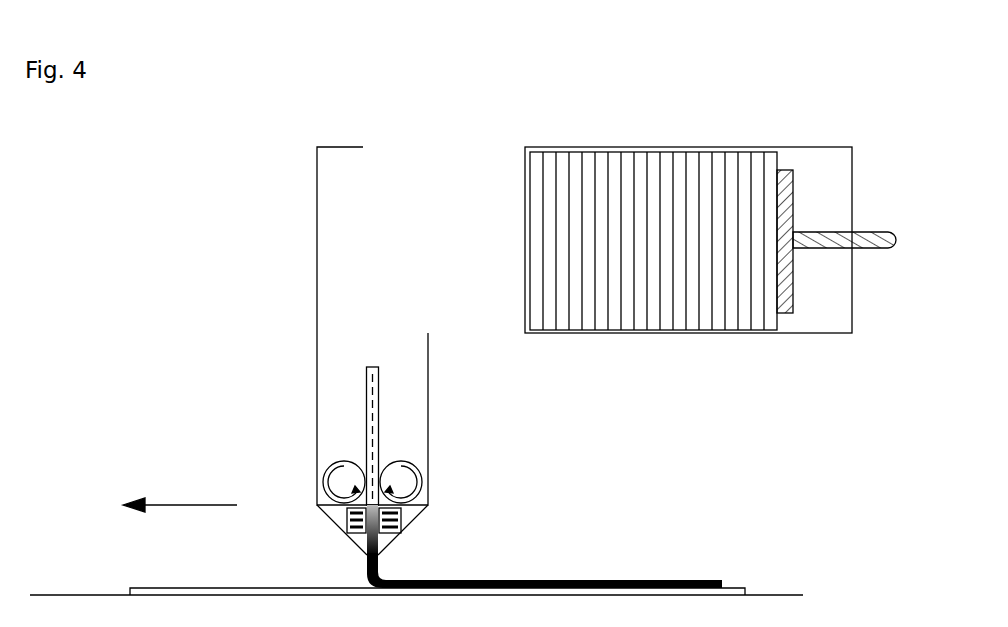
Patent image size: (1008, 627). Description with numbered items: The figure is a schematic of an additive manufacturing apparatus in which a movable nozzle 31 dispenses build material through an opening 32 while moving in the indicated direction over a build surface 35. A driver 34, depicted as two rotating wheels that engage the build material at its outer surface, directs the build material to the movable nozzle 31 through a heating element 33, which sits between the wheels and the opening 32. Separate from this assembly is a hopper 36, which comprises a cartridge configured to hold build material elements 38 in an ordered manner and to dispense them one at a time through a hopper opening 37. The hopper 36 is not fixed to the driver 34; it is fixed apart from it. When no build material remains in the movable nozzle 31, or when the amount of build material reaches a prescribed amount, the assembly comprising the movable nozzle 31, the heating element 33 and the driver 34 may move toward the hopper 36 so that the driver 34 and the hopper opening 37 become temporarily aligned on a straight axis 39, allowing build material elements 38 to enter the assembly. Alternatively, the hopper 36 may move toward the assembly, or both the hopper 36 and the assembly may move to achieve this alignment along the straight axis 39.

The movable nozzle 31 is at (365, 553).
The opening 32 is at (380, 557).
The heating element 33 is at (402, 521).
The driver 34 is at (405, 470).
The substrate 35 is at (416, 607).
The hopper 36 is at (815, 148).
The hopper opening 37 is at (535, 333).
The build material elements 38 is at (705, 316).
The straight axis 39 is at (366, 438).